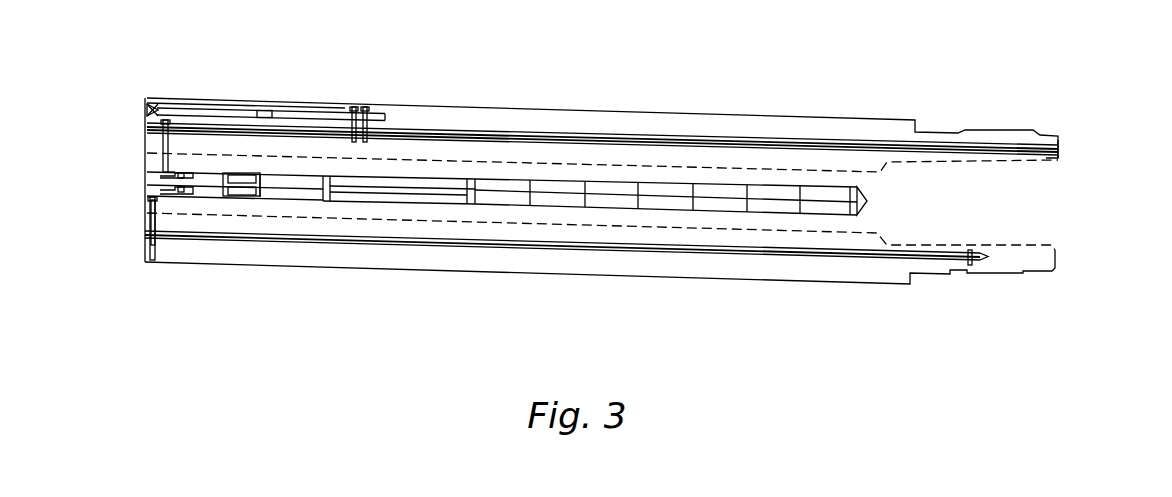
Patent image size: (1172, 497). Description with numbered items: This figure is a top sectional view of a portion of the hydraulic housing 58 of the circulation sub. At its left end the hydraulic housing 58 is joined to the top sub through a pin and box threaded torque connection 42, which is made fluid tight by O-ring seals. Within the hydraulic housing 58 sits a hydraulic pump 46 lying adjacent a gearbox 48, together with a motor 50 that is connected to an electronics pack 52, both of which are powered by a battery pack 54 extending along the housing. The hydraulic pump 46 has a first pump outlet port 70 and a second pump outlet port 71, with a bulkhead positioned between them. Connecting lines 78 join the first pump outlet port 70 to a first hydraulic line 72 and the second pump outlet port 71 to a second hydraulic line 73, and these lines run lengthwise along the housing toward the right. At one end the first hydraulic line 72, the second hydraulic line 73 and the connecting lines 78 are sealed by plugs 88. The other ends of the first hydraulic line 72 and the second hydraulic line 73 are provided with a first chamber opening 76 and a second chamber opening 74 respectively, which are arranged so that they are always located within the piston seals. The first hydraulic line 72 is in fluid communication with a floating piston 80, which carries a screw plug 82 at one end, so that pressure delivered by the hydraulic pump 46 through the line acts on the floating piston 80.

The pin and box threaded torque connection 42 is at (995, 273).
The hydraulic pump 46 is at (207, 190).
The gearbox 48 is at (243, 197).
The motor 50 is at (298, 190).
The electronics pack 52 is at (445, 202).
The battery pack 54 is at (730, 206).
The hydraulic housing 58 is at (797, 130).
The first pump outlet port 70 is at (160, 173).
The second pump outlet port 71 is at (170, 188).
The first hydraulic line 72 is at (590, 140).
The second hydraulic line 73 is at (632, 256).
The second chamber opening 74 is at (969, 265).
The first chamber opening 76 is at (1059, 157).
The connecting lines 78 is at (163, 145).
The floating piston 80 is at (250, 101).
The screw plug 82 is at (147, 102).
The plugs 88 is at (355, 105).